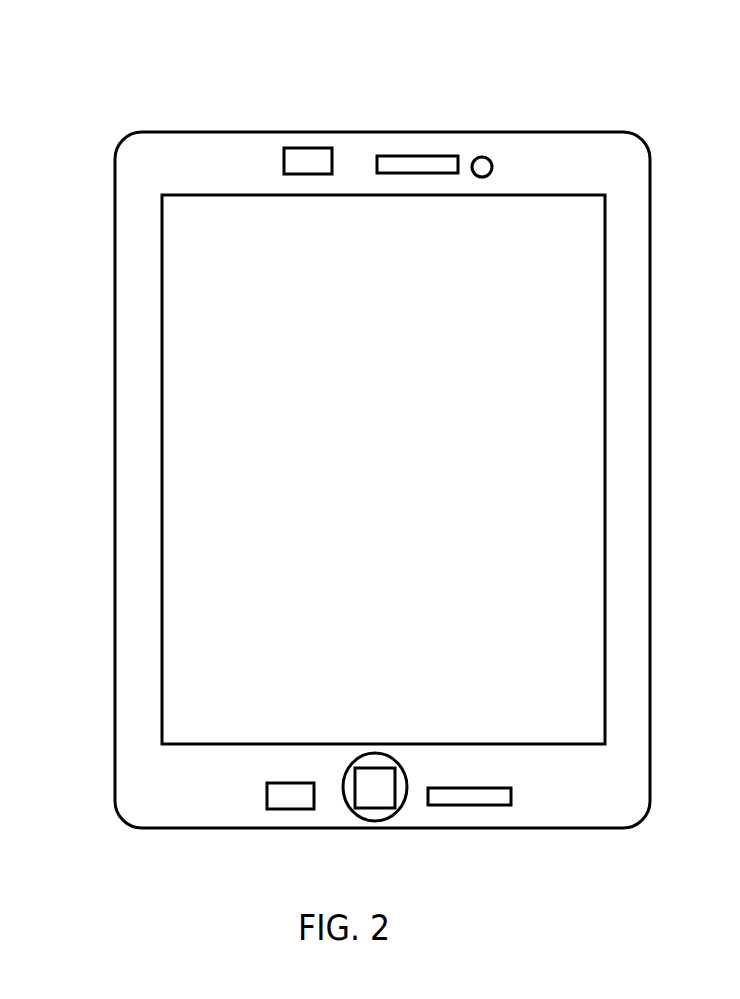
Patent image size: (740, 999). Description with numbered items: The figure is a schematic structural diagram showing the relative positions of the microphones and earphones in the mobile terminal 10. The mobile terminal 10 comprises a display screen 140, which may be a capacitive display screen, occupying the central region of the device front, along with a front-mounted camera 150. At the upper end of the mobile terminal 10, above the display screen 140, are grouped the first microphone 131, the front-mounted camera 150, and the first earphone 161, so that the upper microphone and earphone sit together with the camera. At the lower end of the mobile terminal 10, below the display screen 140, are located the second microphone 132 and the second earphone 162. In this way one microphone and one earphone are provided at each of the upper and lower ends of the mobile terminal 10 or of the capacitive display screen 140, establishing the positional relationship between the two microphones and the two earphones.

The mobile terminal 10 is at (442, 56).
The display screen 140 is at (192, 293).
The first microphone 131 is at (308, 148).
The first earphone 161 is at (427, 156).
The front-mounted camera 150 is at (483, 157).
The second microphone 132 is at (292, 809).
The second earphone 162 is at (470, 805).